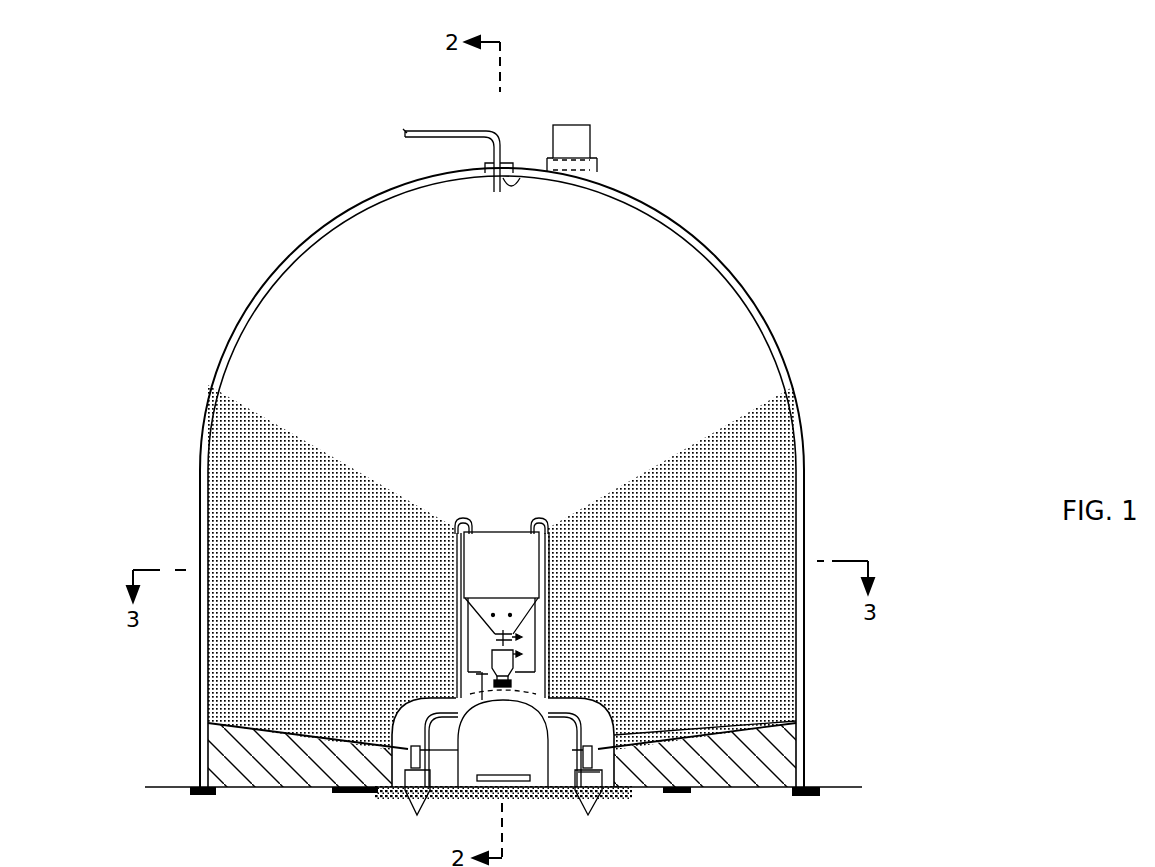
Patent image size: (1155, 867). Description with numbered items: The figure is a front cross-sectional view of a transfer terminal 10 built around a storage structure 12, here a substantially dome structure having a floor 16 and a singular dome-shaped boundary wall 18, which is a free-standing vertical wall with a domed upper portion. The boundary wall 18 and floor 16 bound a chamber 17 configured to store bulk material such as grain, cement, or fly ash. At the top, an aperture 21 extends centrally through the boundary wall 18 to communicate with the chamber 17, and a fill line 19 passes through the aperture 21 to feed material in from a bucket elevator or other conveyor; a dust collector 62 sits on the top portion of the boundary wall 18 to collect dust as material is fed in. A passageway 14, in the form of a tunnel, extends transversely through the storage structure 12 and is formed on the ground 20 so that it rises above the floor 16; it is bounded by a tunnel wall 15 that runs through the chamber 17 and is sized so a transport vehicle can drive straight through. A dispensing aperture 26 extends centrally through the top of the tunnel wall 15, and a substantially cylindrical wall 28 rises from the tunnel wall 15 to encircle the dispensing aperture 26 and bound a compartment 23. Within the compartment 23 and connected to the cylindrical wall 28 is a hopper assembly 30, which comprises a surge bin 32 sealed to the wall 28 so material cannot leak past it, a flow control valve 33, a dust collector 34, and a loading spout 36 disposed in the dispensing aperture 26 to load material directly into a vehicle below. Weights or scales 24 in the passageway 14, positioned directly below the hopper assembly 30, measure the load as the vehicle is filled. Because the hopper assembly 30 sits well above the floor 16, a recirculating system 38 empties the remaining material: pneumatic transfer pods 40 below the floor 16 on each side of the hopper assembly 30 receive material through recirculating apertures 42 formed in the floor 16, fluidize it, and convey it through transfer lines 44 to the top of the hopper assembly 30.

The transfer terminal 10 is at (535, 477).
The storage structure 12 is at (806, 474).
The passageway 14 is at (522, 770).
The tunnel wall 15 is at (392, 787).
The floor 16 is at (408, 750).
The chamber 17 is at (680, 277).
The boundary wall 18 is at (803, 528).
The fill line 19 is at (480, 130).
The ground 20 is at (153, 785).
The aperture 21 is at (515, 178).
The compartment 23 is at (546, 567).
The weights or scales 24 is at (460, 766).
The dispensing aperture 26 is at (500, 700).
The cylindrical wall 28 is at (542, 636).
The hopper assembly 30 is at (502, 560).
The surge bin 32 is at (480, 567).
The flow control valve 33 is at (495, 635).
The dust collector 34 is at (491, 652).
The loading spout 36 is at (481, 688).
The recirculating system 38 is at (610, 826).
The pneumatic transfer pod 40 is at (588, 798).
The recirculating aperture 42 is at (645, 751).
The transfer line 44 is at (538, 522).
The dust collector 62 is at (585, 142).